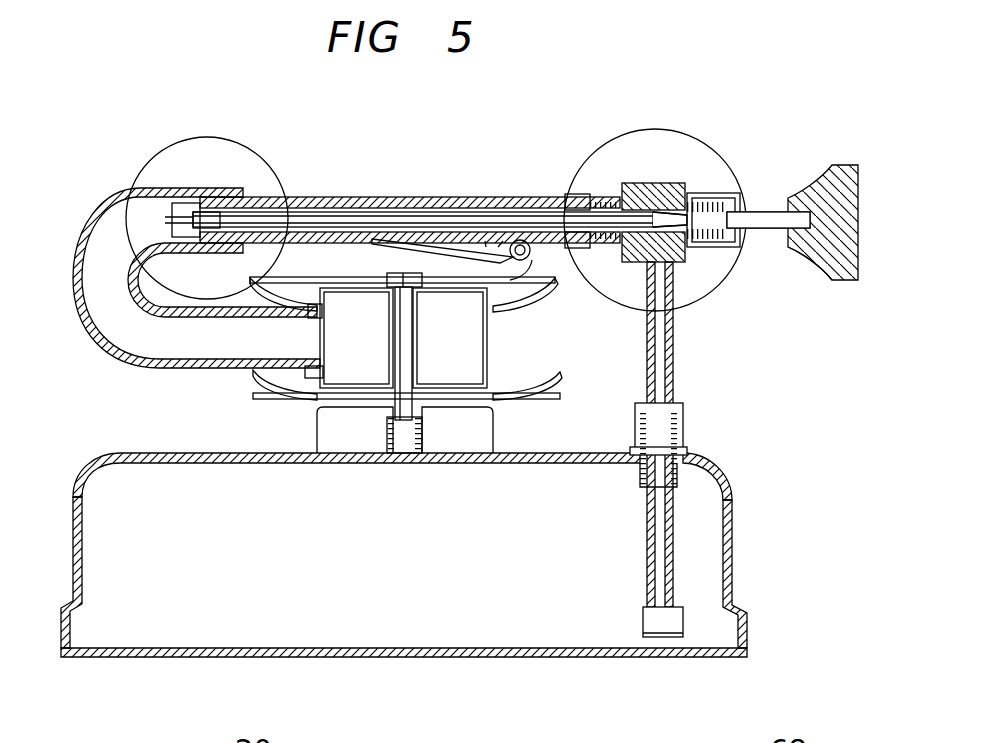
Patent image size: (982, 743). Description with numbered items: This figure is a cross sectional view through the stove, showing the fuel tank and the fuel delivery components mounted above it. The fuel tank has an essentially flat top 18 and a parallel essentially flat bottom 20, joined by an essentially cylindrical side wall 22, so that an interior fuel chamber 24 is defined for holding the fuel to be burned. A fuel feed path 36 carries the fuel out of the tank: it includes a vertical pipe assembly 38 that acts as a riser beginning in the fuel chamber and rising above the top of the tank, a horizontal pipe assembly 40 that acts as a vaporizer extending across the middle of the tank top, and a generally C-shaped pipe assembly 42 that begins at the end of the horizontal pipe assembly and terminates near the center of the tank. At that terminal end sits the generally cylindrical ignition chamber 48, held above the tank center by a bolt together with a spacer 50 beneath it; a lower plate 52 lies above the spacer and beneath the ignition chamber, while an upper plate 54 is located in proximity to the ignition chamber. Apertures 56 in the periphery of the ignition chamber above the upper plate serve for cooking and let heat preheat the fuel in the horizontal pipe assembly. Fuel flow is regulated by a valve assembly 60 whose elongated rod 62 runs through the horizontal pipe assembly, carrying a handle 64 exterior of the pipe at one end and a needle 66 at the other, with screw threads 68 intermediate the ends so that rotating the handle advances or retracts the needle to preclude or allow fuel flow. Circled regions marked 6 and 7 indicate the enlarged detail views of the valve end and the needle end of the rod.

The top 18 is at (160, 453).
The bottom 20 is at (190, 655).
The side wall 22 is at (70, 531).
The interior fuel chamber 24 is at (220, 592).
The fuel feed path 36 is at (687, 187).
The vertical pipe assembly 38 is at (676, 368).
The horizontal pipe assembly 40 is at (408, 200).
The C-shaped pipe assembly 42 is at (89, 222).
The ignition chamber 48 is at (463, 354).
The spacer 50 is at (463, 449).
The lower plate 52 is at (530, 398).
The upper plate 54 is at (533, 300).
The apertures 56 is at (537, 252).
The valve assembly 60 is at (793, 199).
The elongated rod 62 is at (455, 216).
The handle 64 is at (846, 278).
The needle 66 is at (206, 196).
The screw threads 68 is at (660, 212).
The detail view circle FIG. 6 is at (725, 160).
The detail view circle FIG. 7 is at (138, 165).